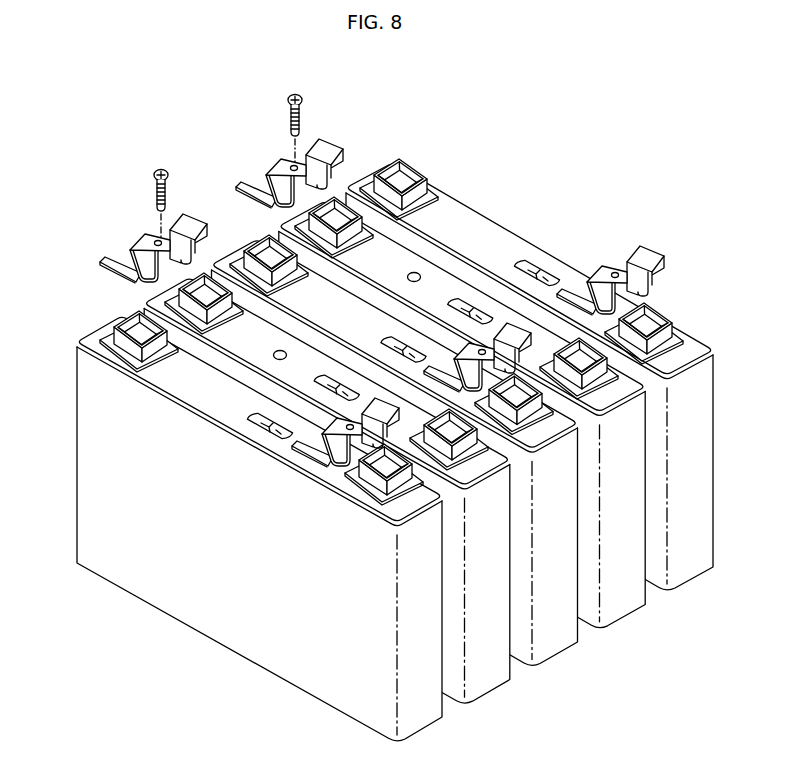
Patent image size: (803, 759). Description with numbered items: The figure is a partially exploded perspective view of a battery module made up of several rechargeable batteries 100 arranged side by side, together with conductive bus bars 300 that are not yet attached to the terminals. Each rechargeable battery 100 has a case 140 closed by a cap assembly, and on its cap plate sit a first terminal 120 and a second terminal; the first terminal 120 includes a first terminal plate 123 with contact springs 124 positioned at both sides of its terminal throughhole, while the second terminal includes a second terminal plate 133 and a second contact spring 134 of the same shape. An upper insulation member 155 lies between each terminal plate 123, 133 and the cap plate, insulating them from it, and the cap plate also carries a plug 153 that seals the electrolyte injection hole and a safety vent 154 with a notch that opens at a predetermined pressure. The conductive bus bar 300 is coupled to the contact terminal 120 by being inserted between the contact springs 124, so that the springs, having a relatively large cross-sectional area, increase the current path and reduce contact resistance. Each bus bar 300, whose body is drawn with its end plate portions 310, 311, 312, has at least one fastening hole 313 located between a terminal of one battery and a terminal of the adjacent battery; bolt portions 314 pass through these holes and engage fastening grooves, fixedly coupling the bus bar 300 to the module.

The rechargeable battery 100 is at (370, 450).
The first terminal 120 is at (235, 512).
The first terminal plate 123 is at (119, 351).
The contact spring 124 is at (110, 350).
The second terminal plate 133 is at (214, 316).
The second contact spring 134 is at (217, 288).
The case 140 is at (300, 668).
The plug 153 is at (289, 356).
The safety vent 154 is at (262, 436).
The upper insulation member 155 is at (160, 358).
The conductive bus bar 300 is at (193, 189).
The bus bar 310 is at (165, 204).
The first plate portion 311 is at (148, 284).
The second plate portion 312 is at (131, 248).
The fastening hole 313 is at (156, 240).
The bolt portion 314 is at (168, 190).